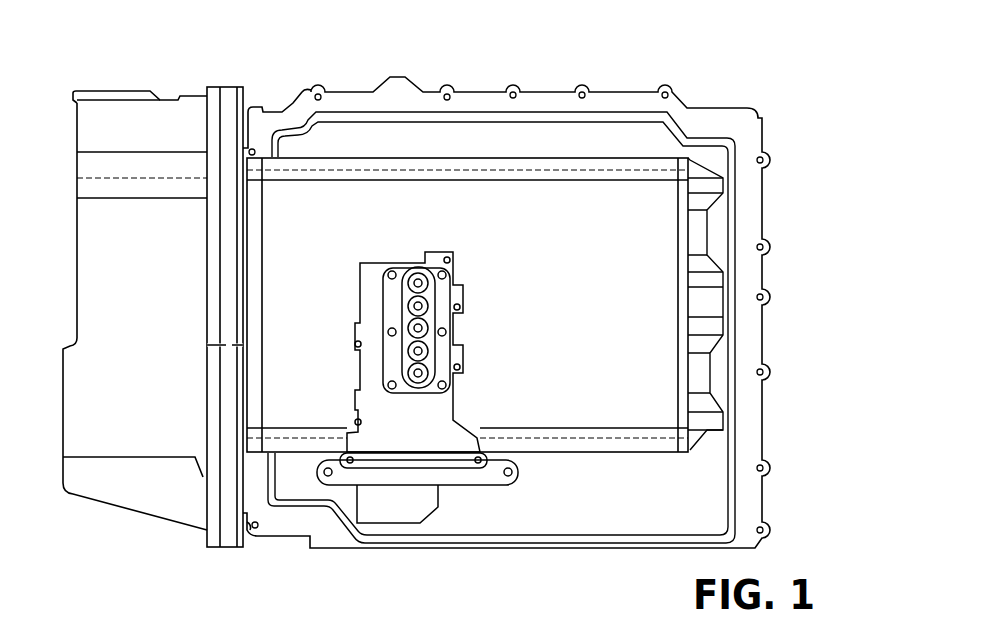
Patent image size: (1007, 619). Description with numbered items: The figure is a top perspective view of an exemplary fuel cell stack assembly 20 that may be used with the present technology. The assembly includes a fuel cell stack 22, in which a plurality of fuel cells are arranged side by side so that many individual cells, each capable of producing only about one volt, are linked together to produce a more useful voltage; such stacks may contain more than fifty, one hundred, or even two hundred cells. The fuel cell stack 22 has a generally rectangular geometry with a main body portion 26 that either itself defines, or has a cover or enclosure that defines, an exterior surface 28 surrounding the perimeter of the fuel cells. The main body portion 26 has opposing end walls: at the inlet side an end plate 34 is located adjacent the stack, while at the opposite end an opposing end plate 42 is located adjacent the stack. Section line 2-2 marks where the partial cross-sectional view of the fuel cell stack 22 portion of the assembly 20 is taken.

The fuel cell stack assembly 20 is at (792, 86).
The fuel cell stack 22 is at (297, 134).
The main body portion 26 is at (513, 195).
The exterior surface 28 is at (556, 311).
The end plate 34 is at (243, 412).
The opposing end plate 42 is at (702, 238).
The line 2- 2 is at (205, 355).